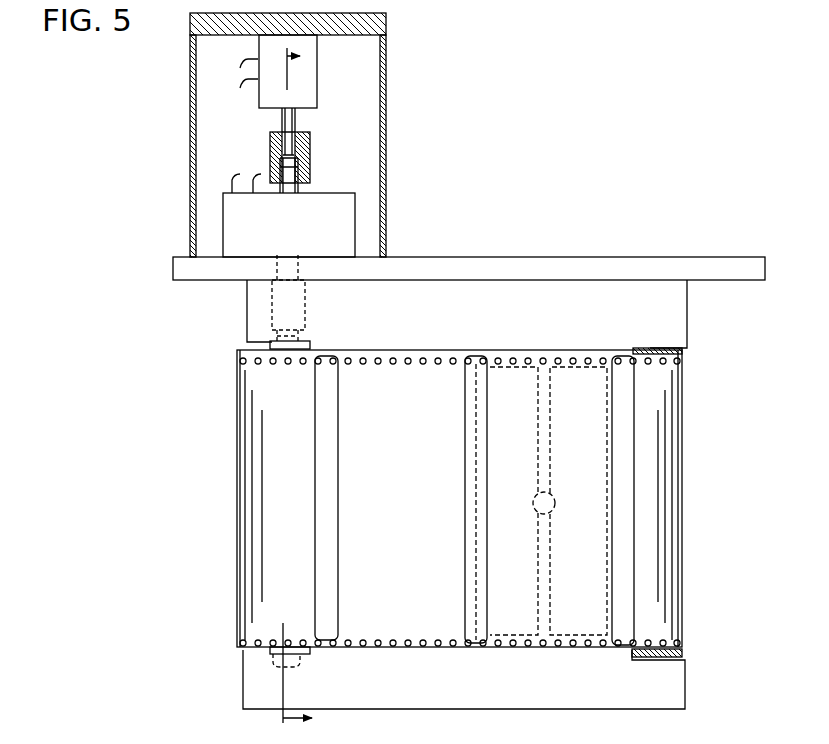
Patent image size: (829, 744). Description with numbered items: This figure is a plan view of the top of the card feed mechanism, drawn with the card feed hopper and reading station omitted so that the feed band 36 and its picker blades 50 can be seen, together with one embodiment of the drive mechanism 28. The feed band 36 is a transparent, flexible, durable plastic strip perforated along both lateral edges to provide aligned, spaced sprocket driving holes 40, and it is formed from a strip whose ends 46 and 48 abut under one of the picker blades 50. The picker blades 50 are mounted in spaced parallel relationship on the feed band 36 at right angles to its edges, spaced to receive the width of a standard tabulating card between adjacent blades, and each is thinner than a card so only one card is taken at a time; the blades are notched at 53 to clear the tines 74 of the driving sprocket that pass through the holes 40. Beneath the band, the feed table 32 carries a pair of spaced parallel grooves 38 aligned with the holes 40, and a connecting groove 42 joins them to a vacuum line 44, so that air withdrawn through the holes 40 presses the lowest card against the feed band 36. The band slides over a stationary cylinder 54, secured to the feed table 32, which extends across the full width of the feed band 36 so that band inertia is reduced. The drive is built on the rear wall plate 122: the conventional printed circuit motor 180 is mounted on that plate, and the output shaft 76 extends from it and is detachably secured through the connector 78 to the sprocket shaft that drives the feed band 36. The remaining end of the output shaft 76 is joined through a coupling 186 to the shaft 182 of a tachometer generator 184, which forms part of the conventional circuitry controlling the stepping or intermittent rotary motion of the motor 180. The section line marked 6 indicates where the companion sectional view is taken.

The section line 6- 6 is at (286, 388).
The drive mechanism 28 is at (398, 132).
The feed table 32 is at (456, 294).
The feed band 36 is at (383, 649).
The grooves 38 is at (525, 370).
The sprocket driving holes 40 is at (588, 367).
The groove 42 is at (552, 458).
The vacuum line 44 is at (552, 515).
The end of feed band strip 46 is at (474, 478).
The end of feed band strip 48 is at (477, 545).
The picker blade 50 is at (333, 427).
The notch 53 is at (475, 354).
The stationary cylinder 54 is at (650, 348).
The tines 74 is at (236, 640).
The output shaft 76 is at (294, 268).
The connector 78 is at (300, 303).
The rear wall plate 122 is at (207, 280).
The printed circuit motor 180 is at (322, 200).
The shaft 182 is at (297, 122).
The tachometer generator 184 is at (311, 88).
The coupling 186 is at (306, 143).